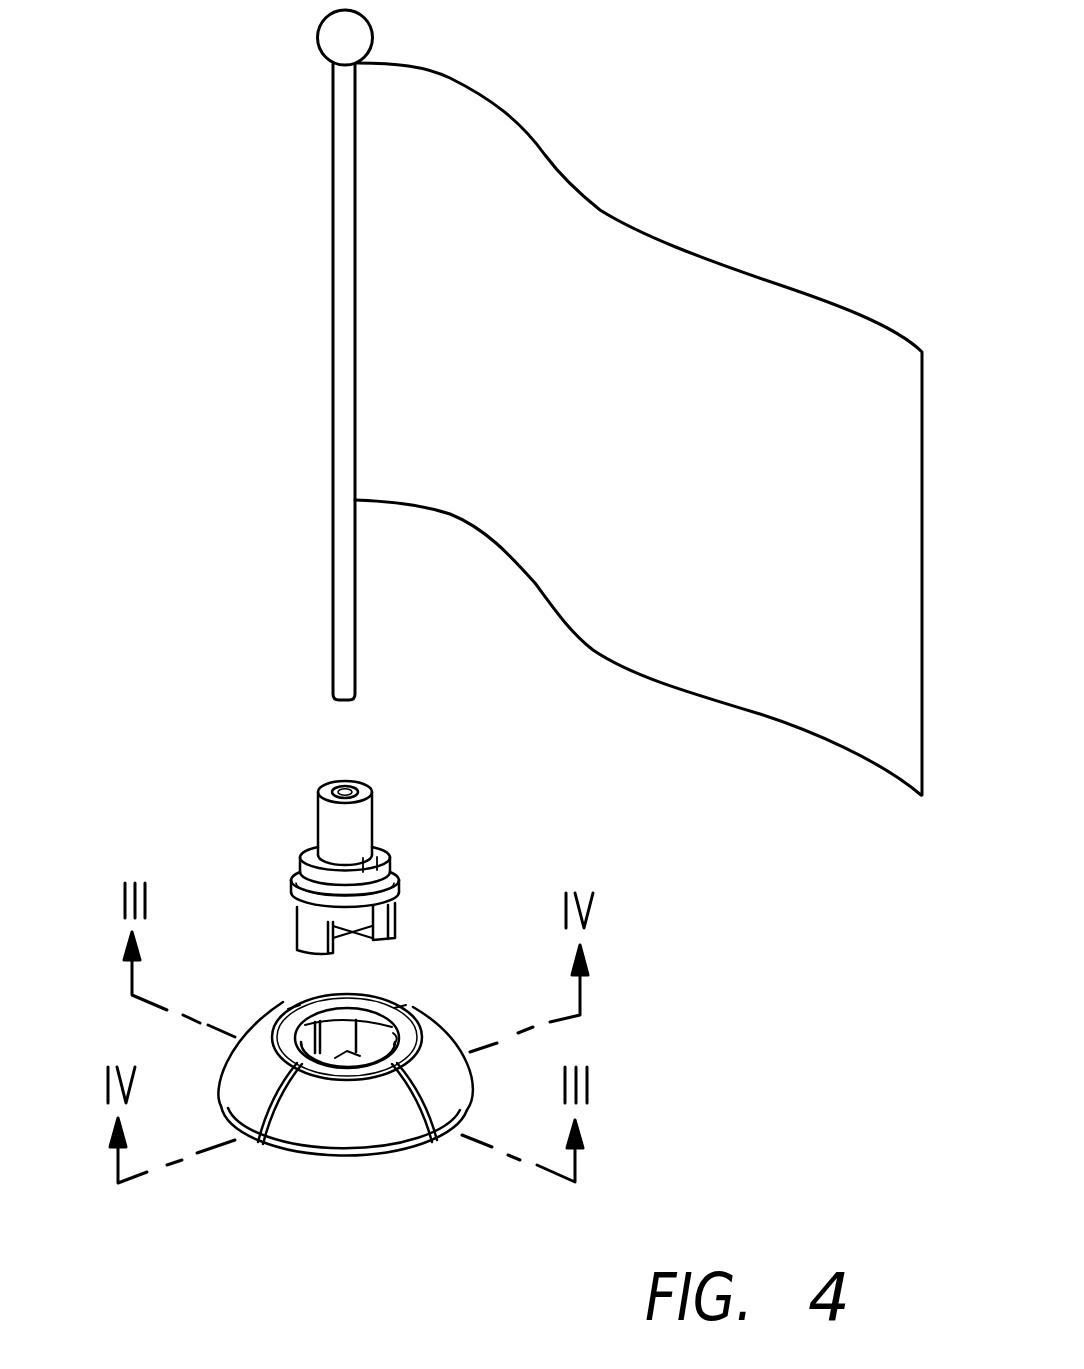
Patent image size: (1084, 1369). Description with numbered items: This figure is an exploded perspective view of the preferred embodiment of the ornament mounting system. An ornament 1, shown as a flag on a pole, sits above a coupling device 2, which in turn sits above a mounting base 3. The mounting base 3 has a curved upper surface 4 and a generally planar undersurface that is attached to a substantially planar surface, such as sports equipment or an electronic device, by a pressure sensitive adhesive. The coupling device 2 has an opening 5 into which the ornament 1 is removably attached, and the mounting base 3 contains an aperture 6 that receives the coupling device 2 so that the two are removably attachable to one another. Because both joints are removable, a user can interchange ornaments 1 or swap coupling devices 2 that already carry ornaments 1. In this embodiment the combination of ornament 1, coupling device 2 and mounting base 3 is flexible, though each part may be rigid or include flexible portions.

The ornament 1 is at (347, 466).
The coupling device 2 is at (372, 839).
The mounting base 3 is at (368, 1076).
The curved upper surface 4 is at (433, 1058).
The opening 5 is at (346, 790).
The aperture 6 is at (340, 1036).